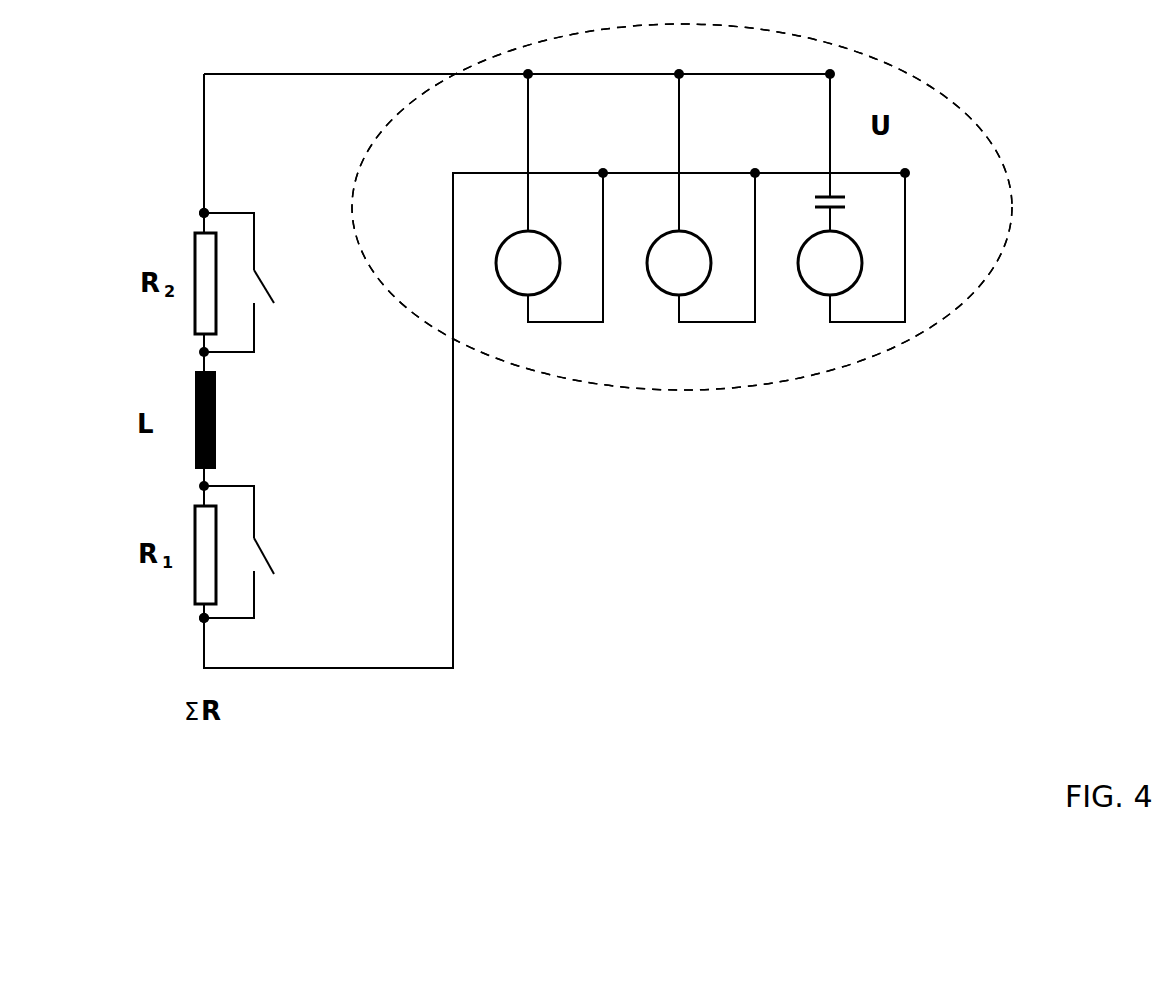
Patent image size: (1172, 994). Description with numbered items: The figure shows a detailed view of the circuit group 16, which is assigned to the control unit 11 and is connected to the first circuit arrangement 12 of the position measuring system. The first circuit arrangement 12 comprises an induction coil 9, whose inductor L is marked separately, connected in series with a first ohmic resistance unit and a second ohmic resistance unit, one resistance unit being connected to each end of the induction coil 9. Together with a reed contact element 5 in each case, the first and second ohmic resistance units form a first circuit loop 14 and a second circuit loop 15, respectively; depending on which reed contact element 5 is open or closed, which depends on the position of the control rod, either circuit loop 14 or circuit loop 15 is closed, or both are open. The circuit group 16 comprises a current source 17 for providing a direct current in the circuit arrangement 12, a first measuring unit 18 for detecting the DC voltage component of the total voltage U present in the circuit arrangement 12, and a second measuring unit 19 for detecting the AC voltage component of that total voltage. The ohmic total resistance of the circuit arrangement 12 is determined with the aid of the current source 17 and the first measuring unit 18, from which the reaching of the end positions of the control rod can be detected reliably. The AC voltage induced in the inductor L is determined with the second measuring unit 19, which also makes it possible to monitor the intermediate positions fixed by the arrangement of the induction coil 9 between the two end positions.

The reed contact element 5 is at (270, 317).
The induction coil 9 is at (228, 420).
The control unit 11 is at (1018, 133).
The first circuit arrangement 12 is at (472, 607).
The first circuit loop 14 is at (187, 613).
The second circuit loop 15 is at (192, 208).
The circuit group 16 is at (927, 333).
The current source 17 is at (498, 300).
The first measuring unit 18 is at (653, 303).
The second measuring unit 19 is at (803, 303).